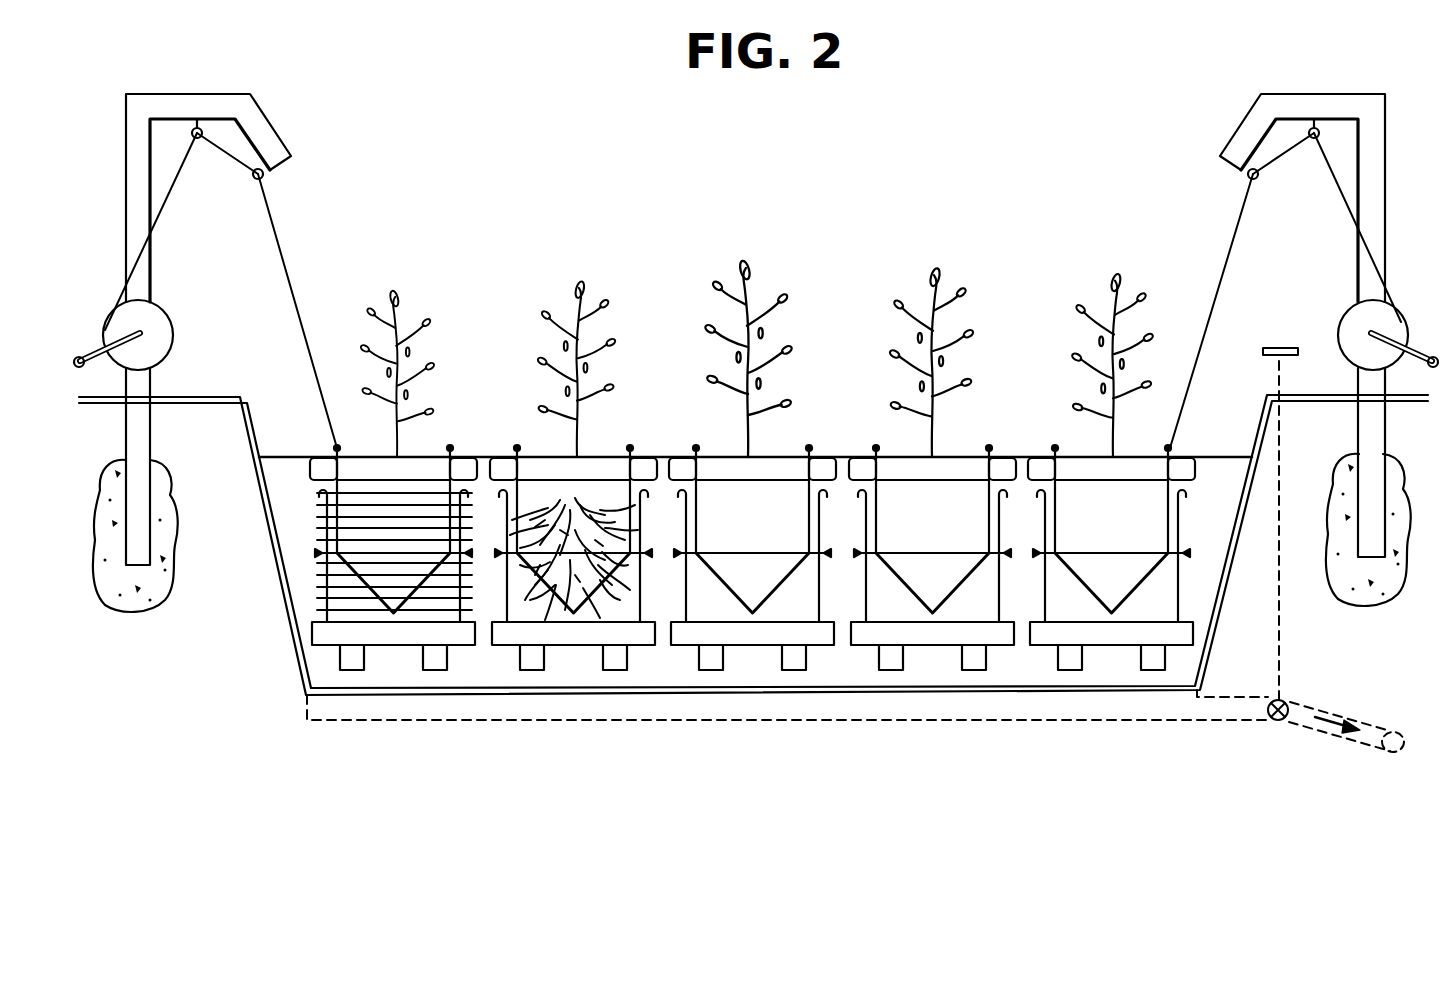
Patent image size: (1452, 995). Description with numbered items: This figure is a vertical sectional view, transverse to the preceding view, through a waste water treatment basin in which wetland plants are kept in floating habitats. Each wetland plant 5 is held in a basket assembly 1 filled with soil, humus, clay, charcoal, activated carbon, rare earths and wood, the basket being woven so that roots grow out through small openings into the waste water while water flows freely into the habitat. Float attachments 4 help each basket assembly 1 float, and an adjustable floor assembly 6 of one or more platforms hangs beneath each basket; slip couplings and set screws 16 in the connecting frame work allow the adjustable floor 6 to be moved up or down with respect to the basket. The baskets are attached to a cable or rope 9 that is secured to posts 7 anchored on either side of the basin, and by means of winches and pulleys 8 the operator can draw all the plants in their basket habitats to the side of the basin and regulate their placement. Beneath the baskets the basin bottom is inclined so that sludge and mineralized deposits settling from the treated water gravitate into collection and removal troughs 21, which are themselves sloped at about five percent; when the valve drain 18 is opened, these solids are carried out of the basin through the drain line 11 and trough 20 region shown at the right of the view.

The basket assembly 1 is at (598, 457).
The float attachments 4 is at (782, 657).
The wetland plant 5 is at (584, 342).
The adjustable floor assembly 6 is at (788, 622).
The posts 7 is at (126, 196).
The winches and pulleys 8 is at (80, 352).
The cable or rope 9 is at (280, 233).
The outlet pipe 11 is at (1340, 715).
The slip couplings and set screws 16 is at (1039, 553).
The valve drain 18 is at (1278, 722).
The trough 20 is at (280, 457).
The collection and removal troughs 21 is at (465, 722).